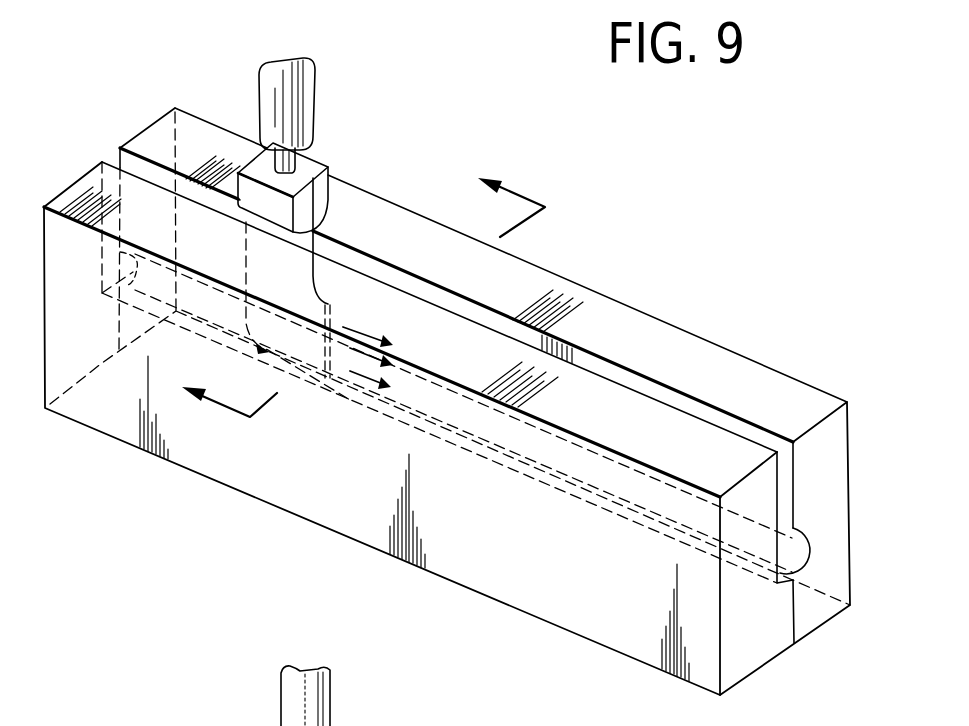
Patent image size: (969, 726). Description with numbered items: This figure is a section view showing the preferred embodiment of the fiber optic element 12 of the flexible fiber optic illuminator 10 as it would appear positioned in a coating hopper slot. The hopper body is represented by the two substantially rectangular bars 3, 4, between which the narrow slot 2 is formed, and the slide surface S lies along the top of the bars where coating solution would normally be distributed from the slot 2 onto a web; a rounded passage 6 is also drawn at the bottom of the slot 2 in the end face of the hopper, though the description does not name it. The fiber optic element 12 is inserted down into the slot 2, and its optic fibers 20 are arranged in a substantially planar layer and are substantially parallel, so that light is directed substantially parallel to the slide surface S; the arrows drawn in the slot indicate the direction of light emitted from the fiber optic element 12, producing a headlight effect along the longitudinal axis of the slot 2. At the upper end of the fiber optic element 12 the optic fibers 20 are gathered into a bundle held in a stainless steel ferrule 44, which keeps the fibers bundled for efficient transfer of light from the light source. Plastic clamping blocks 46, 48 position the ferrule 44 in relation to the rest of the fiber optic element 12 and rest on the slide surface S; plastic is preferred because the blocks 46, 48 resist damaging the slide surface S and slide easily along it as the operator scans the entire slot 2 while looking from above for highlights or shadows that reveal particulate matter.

The slide surface S is at (464, 417).
The slot 2 is at (648, 387).
The rectangular bar 3 is at (836, 541).
The rectangular bar 4 is at (710, 653).
The bore 6 is at (797, 568).
The flexible fiber optic illuminator 10 is at (363, 293).
The fiber optic element 12 is at (322, 280).
The optic fibers 20 is at (334, 317).
The ferrule 44 is at (287, 73).
The clamping block 46 is at (253, 160).
The clamping block 48 is at (320, 156).